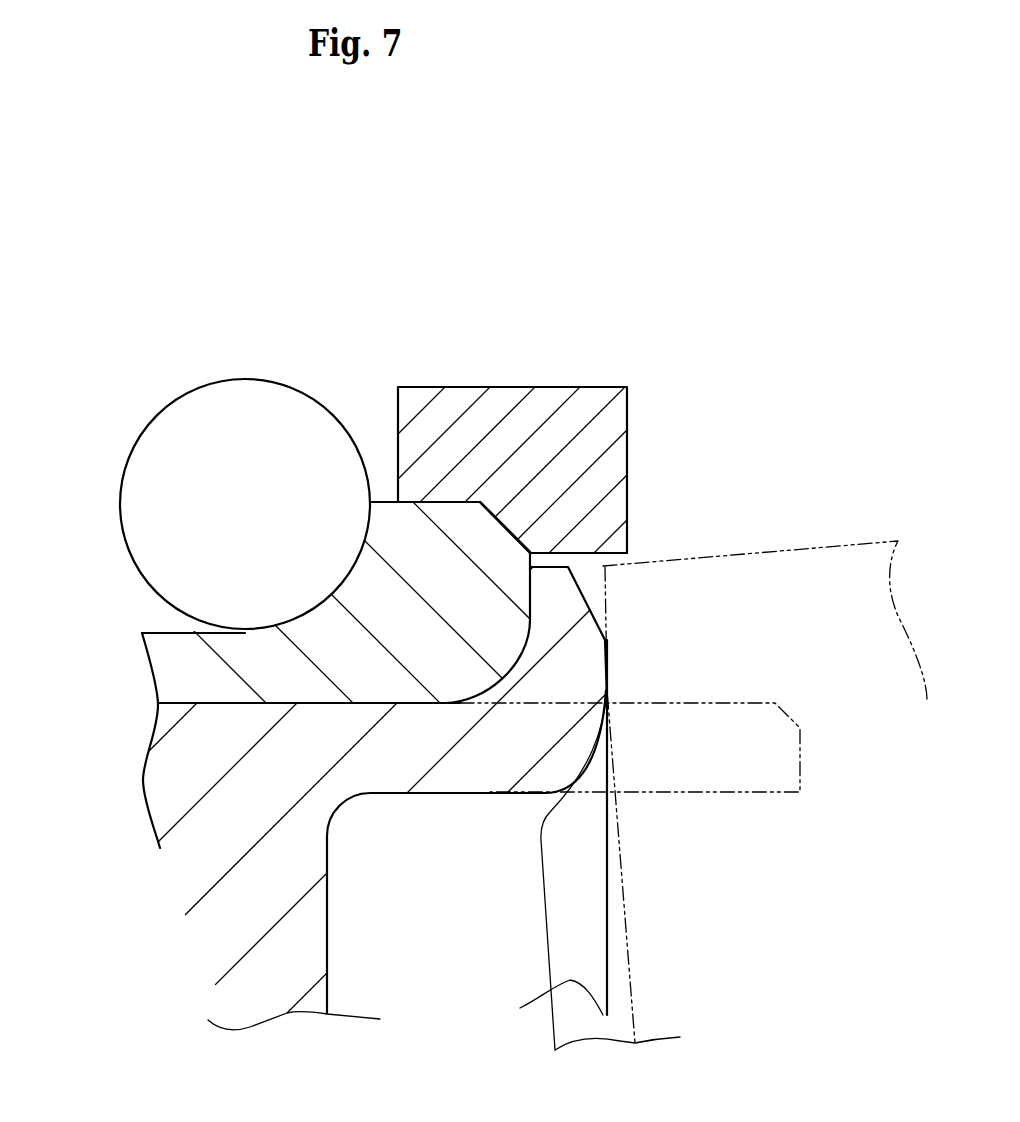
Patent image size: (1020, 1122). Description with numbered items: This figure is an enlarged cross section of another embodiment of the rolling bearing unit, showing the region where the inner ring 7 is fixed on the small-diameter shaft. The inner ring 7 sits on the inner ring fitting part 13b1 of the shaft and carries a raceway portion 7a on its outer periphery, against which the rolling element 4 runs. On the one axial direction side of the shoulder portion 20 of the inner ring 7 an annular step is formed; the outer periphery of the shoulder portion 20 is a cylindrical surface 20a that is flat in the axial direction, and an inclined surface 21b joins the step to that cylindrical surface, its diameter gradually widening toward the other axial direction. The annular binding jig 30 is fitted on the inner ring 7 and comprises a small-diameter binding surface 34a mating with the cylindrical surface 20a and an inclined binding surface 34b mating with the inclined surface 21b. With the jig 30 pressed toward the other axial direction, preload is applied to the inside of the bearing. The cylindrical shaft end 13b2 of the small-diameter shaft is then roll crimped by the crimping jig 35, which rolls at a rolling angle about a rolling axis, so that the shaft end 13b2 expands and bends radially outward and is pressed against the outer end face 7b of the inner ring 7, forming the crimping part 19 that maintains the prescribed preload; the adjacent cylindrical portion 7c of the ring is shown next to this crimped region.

The ball 4 is at (208, 400).
The inner ring 7 is at (151, 665).
The raceway portion 7a is at (243, 630).
The outer end face 7b is at (532, 590).
The cylindrical portion 7c is at (525, 672).
The inner ring fitting part 13b1 is at (225, 705).
The shaft end 13b2 is at (737, 773).
The crimping part 19 is at (580, 667).
The shoulder portion 20 is at (413, 525).
The cylindrical surface 20a is at (442, 502).
The inclined surface 21b is at (512, 538).
The annular binding jig 30 is at (563, 387).
The small-diameter binding surface 34a is at (403, 511).
The inclined binding surface 34b is at (498, 520).
The crimping jig 35 is at (812, 550).